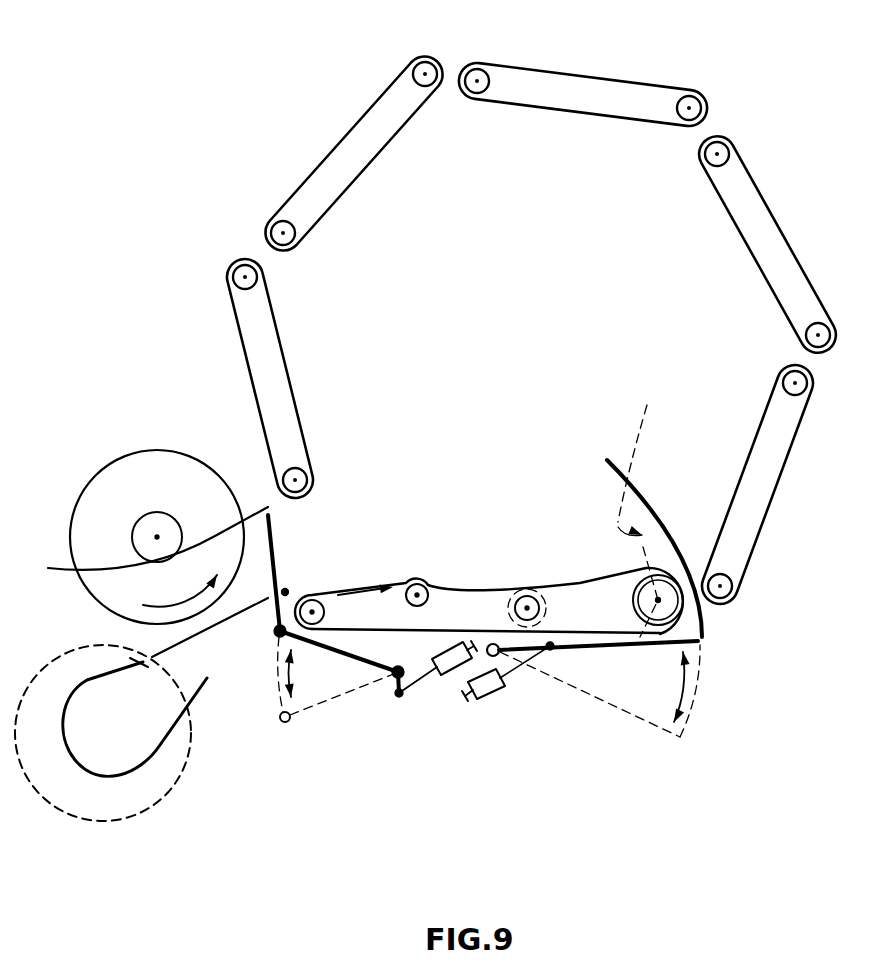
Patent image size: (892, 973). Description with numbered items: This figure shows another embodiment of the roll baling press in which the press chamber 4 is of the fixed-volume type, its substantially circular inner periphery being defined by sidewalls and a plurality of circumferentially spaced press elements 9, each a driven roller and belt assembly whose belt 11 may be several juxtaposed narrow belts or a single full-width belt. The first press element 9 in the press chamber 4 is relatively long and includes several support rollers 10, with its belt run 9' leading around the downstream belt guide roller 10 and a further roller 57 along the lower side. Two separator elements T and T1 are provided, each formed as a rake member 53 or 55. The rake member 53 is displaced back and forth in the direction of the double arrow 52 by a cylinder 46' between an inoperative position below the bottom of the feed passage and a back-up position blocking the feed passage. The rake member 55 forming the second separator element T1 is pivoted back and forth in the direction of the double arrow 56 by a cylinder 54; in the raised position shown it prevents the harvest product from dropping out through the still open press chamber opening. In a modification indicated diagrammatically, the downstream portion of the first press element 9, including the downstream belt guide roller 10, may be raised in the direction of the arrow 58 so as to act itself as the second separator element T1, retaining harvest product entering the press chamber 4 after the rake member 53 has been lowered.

The press chamber 4 is at (720, 275).
The press element 9 is at (470, 535).
The conveyor belt run around deflection roller 9' is at (627, 538).
The support roller 10 is at (652, 605).
The belt 11 is at (562, 587).
The double arrow 52 is at (290, 667).
The rake member 53 is at (273, 537).
The cylinder 54 is at (496, 693).
The rake member 55 is at (677, 533).
The double arrow 56 is at (685, 688).
The roller 57 is at (527, 608).
The arrow 58 is at (641, 504).
The cylinder 46' is at (438, 712).
The first separator element T is at (282, 563).
The second separator element T1 is at (662, 503).